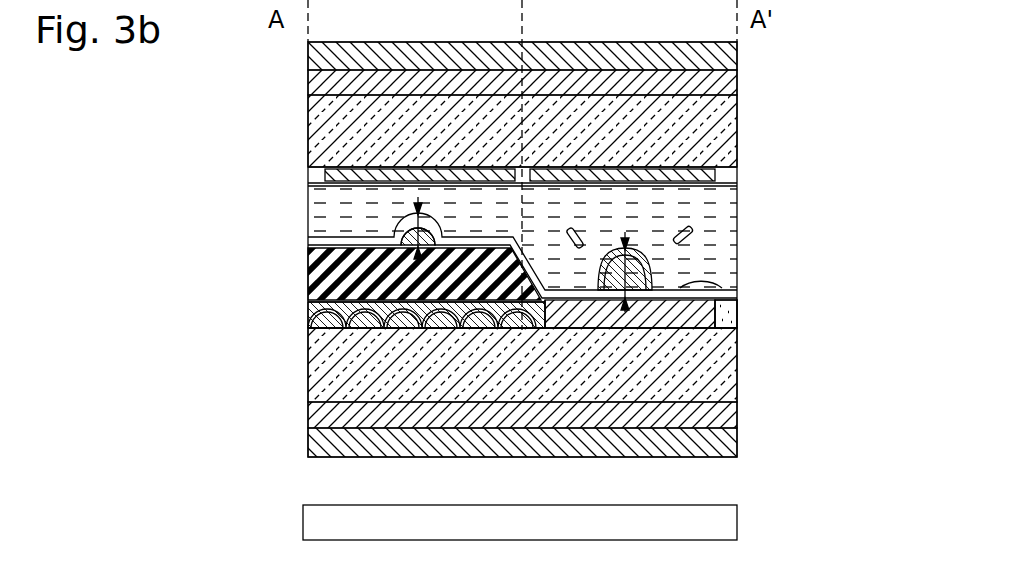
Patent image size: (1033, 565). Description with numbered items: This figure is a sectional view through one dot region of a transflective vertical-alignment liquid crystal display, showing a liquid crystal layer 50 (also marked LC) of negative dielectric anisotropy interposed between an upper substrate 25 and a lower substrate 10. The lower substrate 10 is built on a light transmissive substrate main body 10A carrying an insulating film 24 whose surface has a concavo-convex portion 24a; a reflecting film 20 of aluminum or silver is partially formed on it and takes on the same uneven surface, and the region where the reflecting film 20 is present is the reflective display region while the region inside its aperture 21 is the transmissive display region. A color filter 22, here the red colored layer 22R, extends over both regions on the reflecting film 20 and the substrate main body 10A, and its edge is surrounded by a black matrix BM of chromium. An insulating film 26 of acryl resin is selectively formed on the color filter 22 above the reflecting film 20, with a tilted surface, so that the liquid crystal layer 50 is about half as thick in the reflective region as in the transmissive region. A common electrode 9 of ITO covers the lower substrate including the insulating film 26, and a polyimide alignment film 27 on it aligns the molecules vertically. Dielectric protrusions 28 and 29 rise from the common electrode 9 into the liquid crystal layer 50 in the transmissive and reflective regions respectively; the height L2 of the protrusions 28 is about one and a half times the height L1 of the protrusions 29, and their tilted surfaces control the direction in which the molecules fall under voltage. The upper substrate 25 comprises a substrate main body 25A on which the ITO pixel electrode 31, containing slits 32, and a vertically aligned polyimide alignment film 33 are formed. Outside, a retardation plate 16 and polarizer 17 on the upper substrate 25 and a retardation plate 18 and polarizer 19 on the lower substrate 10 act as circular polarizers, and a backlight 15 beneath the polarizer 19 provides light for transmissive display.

The polarizer 17 is at (737, 46).
The retardation plate 16 is at (737, 84).
The substrate main body 25A is at (737, 118).
The upper substrate 25 is at (222, 44).
The pixel electrode 31 is at (737, 160).
The slits 32 is at (737, 180).
The alignment film 33 is at (737, 205).
The liquid crystal layer LC is at (737, 240).
The alignment film 27 is at (308, 237).
The protrusions 29 is at (396, 232).
The height of protrusions 29 L1 is at (440, 233).
The insulating film 26 is at (308, 262).
The liquid crystal layer 50 is at (737, 262).
The height of protrusions 28 L2 is at (636, 252).
The protrusions 28 is at (737, 290).
The common electrode 9 is at (737, 310).
The color filter 22 is at (737, 330).
The red colored layer 22R is at (726, 314).
The black matrix BM is at (308, 318).
The concavo-convex portion 24a is at (328, 320).
The insulating film 24 is at (455, 316).
The aperture 21 is at (520, 330).
The reflecting film 20 is at (308, 352).
The substrate main body 10A is at (737, 385).
The lower substrate 10 is at (222, 262).
The retardation plate 18 is at (737, 415).
The polarizer 19 is at (737, 440).
The backlight 15 is at (722, 516).